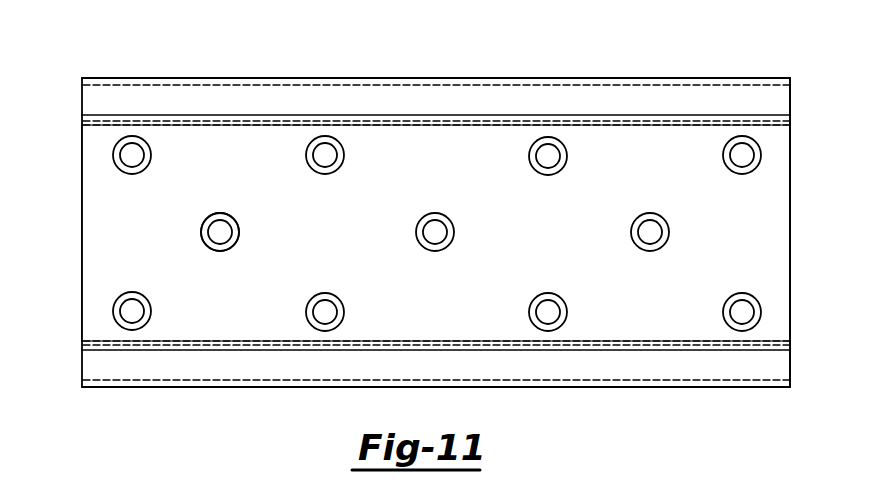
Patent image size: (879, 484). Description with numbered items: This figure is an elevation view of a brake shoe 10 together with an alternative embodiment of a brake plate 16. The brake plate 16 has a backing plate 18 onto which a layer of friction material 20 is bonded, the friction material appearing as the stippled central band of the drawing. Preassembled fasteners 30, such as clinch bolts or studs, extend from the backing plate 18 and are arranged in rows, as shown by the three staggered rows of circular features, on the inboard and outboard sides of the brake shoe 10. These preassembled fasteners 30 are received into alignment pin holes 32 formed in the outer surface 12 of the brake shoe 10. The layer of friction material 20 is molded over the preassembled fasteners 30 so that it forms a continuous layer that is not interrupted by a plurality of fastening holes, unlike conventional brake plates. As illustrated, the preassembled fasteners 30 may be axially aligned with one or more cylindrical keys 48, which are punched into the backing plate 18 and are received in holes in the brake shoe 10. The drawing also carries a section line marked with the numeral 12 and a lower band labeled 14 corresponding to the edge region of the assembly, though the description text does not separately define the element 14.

The brake shoe 10 is at (68, 266).
The outer surface 12 is at (223, 105).
The bottom flange 14 is at (436, 364).
The brake plate 16 is at (790, 240).
The backing plate 18 is at (720, 78).
The layer of friction material 20 is at (100, 210).
The preassembled fasteners 30 is at (125, 153).
The alignment pin holes 32 is at (226, 228).
The cylindrical keys 48 is at (224, 252).